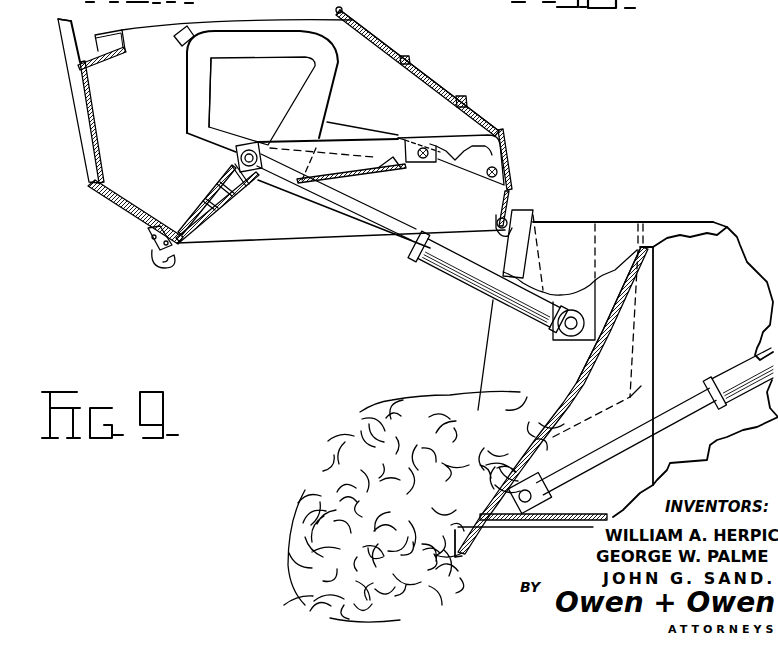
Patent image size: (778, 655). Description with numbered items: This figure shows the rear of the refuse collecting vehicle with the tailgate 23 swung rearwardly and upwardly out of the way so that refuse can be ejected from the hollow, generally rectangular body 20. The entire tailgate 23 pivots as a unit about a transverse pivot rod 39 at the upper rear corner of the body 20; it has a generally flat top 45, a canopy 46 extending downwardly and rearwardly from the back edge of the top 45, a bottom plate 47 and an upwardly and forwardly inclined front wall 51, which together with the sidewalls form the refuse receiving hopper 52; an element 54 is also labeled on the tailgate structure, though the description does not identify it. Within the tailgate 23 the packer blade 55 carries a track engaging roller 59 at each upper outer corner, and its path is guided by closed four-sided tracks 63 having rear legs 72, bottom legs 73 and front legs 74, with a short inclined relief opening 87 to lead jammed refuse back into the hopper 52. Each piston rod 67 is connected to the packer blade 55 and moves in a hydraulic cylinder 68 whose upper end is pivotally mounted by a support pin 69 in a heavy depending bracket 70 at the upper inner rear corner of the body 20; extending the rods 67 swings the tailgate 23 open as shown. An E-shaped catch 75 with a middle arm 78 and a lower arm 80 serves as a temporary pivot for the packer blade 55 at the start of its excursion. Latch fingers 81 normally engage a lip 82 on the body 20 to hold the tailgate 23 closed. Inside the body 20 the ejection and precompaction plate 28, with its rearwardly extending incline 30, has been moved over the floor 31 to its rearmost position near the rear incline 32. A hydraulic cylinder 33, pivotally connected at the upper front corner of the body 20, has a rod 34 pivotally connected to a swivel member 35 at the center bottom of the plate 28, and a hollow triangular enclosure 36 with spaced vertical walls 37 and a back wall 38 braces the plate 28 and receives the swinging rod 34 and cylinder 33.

The body 20 is at (661, 214).
The tailgate 23 is at (403, 41).
The ejection and precompaction plate 28 is at (560, 378).
The incline 30 is at (604, 408).
The floor 31 is at (553, 512).
The rear incline 32 is at (465, 535).
The hydraulic cylinder 33 is at (757, 360).
The rod 34 is at (688, 399).
The swivel member 35 is at (552, 448).
The triangular enclosure 36 is at (622, 328).
The vertical walls 37 is at (627, 372).
The back wall 38 is at (570, 382).
The pivot rod 39 is at (507, 222).
The top 45 is at (511, 155).
The canopy 46 is at (433, 75).
The bottom plate 47 is at (93, 138).
The inclined front wall 51 is at (123, 210).
The refuse receiving hopper 52 is at (141, 47).
The plate end 54 is at (76, 22).
The packer blade 55 is at (230, 214).
The track engaging roller 59 is at (447, 160).
The closed four-sided tracks 63 is at (322, 90).
The piston rods 67 is at (350, 218).
The hydraulic cylinders 68 is at (432, 270).
The support pin 69 is at (558, 338).
The depending brackets 70 is at (597, 303).
The rear legs 72 is at (285, 50).
The bottom legs 73 is at (197, 102).
The front legs 74 is at (218, 139).
The E-shaped catch 75 is at (470, 135).
The middle arm 78 is at (483, 166).
The lower arms 80 is at (408, 162).
The latch fingers 81 is at (161, 260).
The lip 82 is at (455, 558).
The relief opening 87 is at (193, 30).